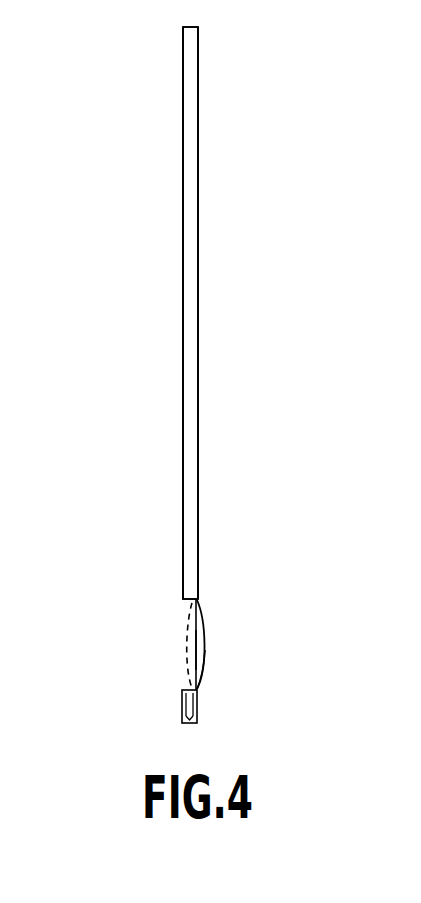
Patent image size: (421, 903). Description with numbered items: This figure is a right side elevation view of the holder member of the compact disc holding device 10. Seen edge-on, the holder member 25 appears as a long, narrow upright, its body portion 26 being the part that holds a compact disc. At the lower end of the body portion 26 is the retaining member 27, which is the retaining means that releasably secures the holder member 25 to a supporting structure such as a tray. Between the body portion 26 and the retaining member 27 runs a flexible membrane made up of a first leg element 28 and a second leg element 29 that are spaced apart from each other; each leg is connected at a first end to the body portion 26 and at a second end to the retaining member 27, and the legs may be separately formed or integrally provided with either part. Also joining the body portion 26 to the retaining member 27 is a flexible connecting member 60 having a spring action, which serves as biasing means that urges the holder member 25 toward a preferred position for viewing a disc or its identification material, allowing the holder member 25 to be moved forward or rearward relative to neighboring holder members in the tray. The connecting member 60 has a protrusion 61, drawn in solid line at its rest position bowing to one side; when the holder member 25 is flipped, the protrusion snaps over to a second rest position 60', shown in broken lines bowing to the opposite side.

The device 10 is at (142, 260).
The holder member 25 is at (181, 120).
The body portion 26 is at (183, 293).
The retaining member 27 is at (197, 708).
The first leg element 28 is at (199, 653).
The second leg element 29 is at (198, 203).
The flexible connecting member 60 is at (257, 644).
The second rest position 60' is at (156, 626).
The protrusion 61 is at (204, 663).